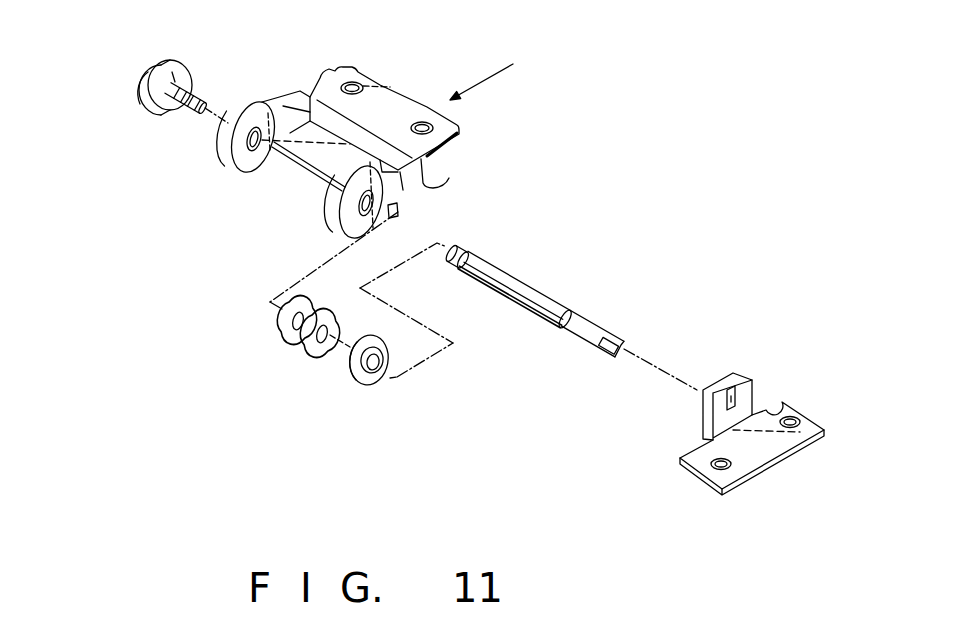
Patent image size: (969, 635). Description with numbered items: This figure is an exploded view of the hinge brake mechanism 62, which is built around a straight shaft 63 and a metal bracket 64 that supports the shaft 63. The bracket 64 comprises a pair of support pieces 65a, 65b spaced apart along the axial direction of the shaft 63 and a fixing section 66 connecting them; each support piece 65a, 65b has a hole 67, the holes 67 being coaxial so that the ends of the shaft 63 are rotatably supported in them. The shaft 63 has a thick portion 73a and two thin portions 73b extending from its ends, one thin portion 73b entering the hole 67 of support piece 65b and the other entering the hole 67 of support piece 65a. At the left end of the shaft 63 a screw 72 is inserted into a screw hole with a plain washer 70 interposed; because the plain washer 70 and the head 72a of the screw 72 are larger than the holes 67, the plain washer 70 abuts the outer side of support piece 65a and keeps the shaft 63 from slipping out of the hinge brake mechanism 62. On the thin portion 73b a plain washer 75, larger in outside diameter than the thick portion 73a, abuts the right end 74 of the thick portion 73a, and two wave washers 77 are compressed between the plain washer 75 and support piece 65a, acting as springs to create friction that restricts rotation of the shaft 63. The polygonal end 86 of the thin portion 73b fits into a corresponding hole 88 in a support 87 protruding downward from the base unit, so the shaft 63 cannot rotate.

The hinge brake mechanism 62 is at (386, 129).
The shaft 63 is at (557, 315).
The bracket 64 is at (405, 100).
The support piece 65a is at (275, 98).
The support piece 65b is at (424, 182).
The fixing section 66 is at (388, 92).
The hole 67 is at (262, 168).
The plain washer 70 is at (160, 110).
The screw 72 is at (175, 84).
The head of screw 72a is at (142, 74).
The thick portion 73a is at (543, 287).
The thin portion 73b is at (588, 316).
The right end of thick portion 74 is at (462, 248).
The plain washer 75 is at (363, 388).
The wave washers 77 is at (307, 348).
The end of thin portion 86 is at (604, 355).
The support 87 is at (777, 447).
The hole 88 is at (735, 399).